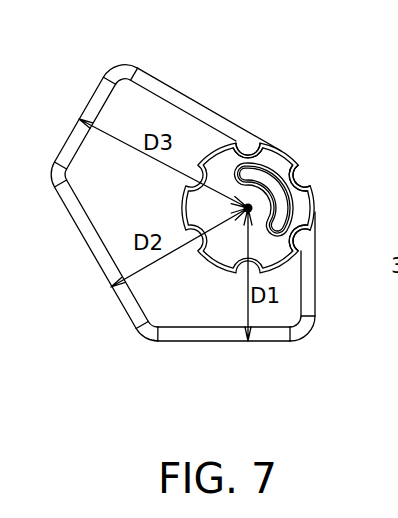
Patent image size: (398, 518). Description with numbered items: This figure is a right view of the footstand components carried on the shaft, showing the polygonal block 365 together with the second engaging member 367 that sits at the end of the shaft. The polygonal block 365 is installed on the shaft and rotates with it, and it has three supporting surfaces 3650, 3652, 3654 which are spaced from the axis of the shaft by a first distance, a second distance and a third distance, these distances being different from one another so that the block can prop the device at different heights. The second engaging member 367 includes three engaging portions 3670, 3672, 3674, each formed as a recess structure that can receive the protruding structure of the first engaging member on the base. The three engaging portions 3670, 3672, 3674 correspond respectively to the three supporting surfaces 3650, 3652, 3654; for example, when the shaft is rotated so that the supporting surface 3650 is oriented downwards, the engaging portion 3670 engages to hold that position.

The polygonal block 365 is at (153, 104).
The supporting surface 3654 is at (91, 97).
The supporting surface 3652 is at (86, 244).
The supporting surface 3650 is at (265, 343).
The second engaging member 367 is at (277, 156).
The engaging portion 3670 is at (245, 147).
The engaging portion 3672 is at (304, 174).
The engaging portion 3674 is at (300, 240).